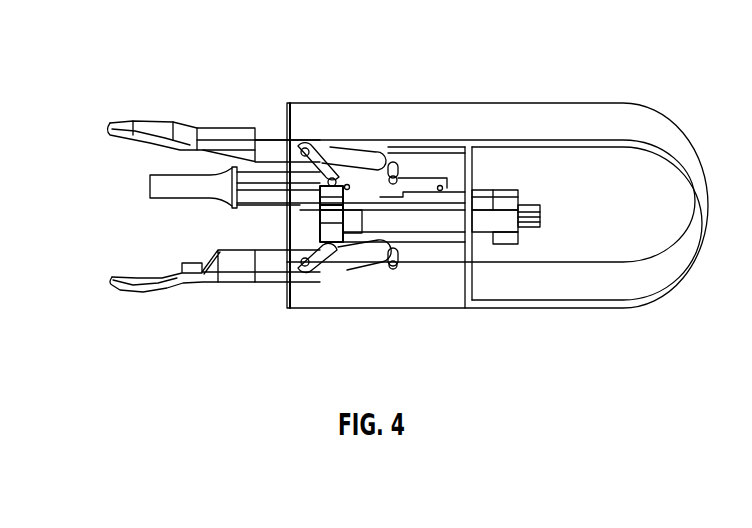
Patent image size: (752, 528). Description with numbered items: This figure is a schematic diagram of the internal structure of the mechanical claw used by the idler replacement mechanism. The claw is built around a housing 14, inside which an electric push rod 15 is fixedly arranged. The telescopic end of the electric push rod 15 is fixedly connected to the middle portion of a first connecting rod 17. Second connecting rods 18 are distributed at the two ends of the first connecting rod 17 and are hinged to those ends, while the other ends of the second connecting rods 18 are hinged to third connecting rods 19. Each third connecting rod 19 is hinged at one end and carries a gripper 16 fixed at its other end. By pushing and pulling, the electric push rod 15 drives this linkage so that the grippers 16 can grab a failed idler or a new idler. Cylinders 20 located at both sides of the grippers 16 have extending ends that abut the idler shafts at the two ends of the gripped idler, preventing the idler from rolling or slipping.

The housing 14 is at (445, 117).
The electric push rod 15 is at (490, 218).
The gripper 16 is at (243, 138).
The first connecting rod 17 is at (343, 227).
The second connecting rod 18 is at (320, 243).
The third connecting rod 19 is at (265, 265).
The cylinder 20 is at (167, 187).